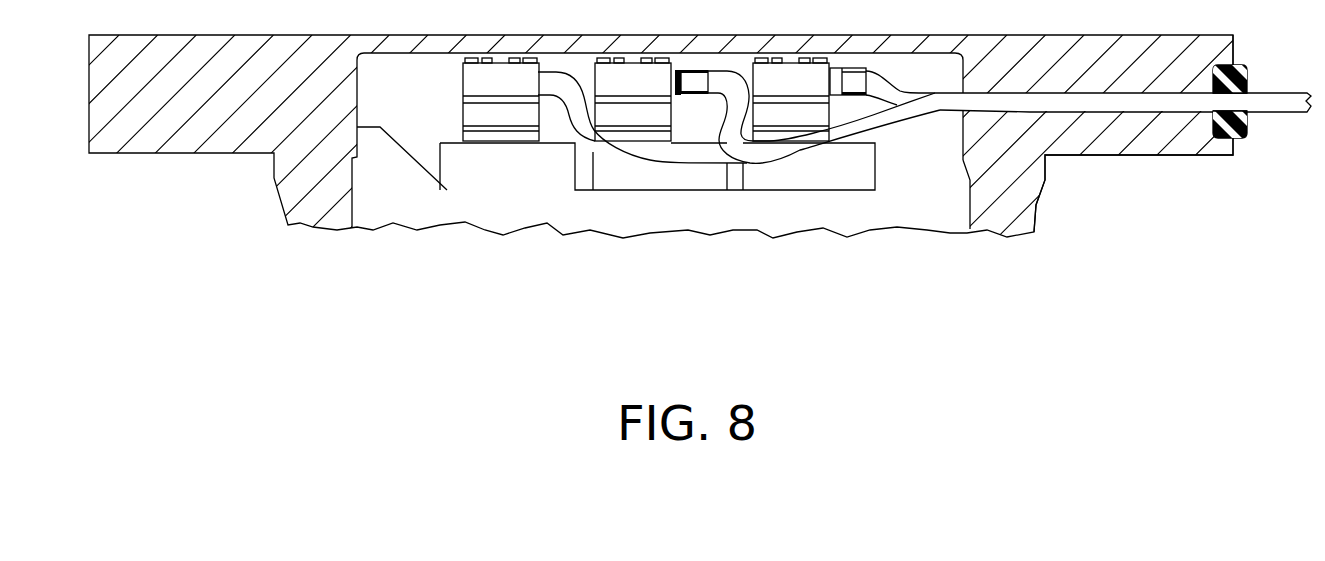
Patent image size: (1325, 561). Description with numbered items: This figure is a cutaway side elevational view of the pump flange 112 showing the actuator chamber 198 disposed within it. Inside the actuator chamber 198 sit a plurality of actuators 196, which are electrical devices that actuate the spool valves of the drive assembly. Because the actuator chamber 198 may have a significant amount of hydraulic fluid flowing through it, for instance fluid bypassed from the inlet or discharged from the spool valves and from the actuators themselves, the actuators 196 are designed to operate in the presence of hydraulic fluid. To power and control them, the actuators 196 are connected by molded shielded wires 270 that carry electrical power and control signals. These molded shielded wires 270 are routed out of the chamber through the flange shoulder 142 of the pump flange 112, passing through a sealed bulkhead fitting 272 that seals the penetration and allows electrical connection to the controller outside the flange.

The pump flange 112 is at (290, 119).
The flange shoulder 142 is at (1107, 142).
The actuator chamber 198 is at (378, 90).
The actuators 196 is at (478, 87).
The molded shielded wires 270 is at (866, 126).
The sealed bulkhead fitting 272 is at (1246, 125).